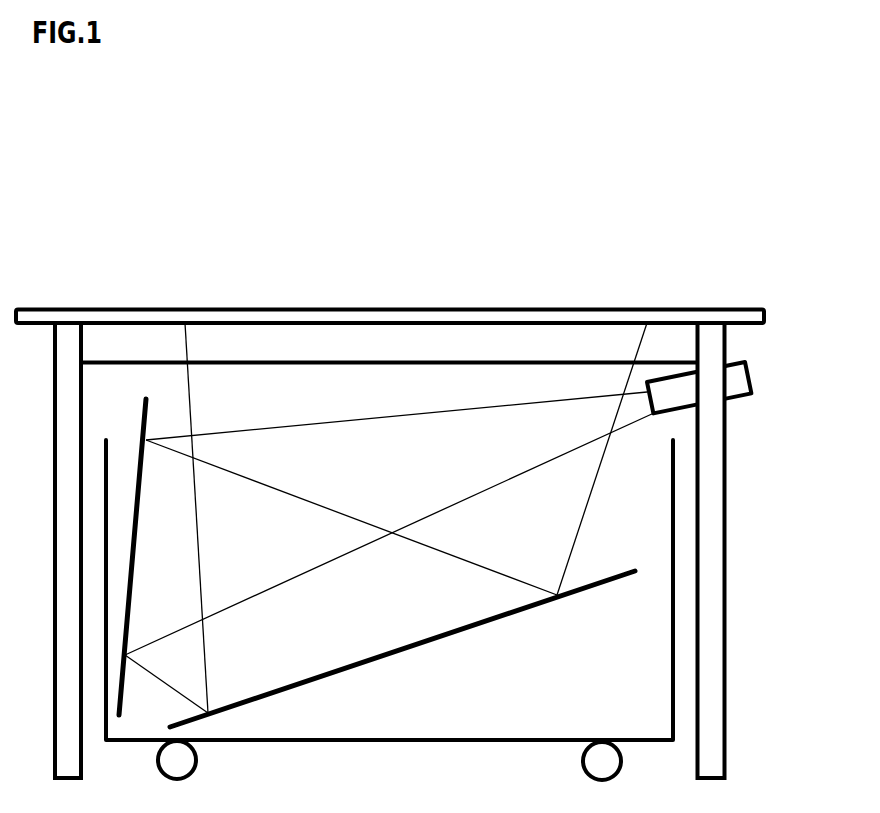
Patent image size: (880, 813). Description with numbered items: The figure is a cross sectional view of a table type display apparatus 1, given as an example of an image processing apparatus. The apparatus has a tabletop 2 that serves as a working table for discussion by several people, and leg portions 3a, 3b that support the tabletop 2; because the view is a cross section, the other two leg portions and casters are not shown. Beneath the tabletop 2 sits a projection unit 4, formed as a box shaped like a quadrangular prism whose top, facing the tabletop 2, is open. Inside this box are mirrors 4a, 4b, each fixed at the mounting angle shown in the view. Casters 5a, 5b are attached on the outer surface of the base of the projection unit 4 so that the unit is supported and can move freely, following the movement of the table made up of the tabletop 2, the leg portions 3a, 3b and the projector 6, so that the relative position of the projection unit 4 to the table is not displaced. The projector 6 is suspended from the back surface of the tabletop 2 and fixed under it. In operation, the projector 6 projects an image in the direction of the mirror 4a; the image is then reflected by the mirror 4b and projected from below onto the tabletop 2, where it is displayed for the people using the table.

The table type display apparatus 1 is at (362, 241).
The tabletop 2 is at (713, 310).
The leg portion 3a is at (54, 528).
The leg portion 3b is at (725, 528).
The projection unit 4 is at (353, 742).
The mirror 4a is at (133, 568).
The mirror 4b is at (452, 635).
The caster 5a is at (200, 757).
The caster 5b is at (581, 757).
The projector 6 is at (737, 373).